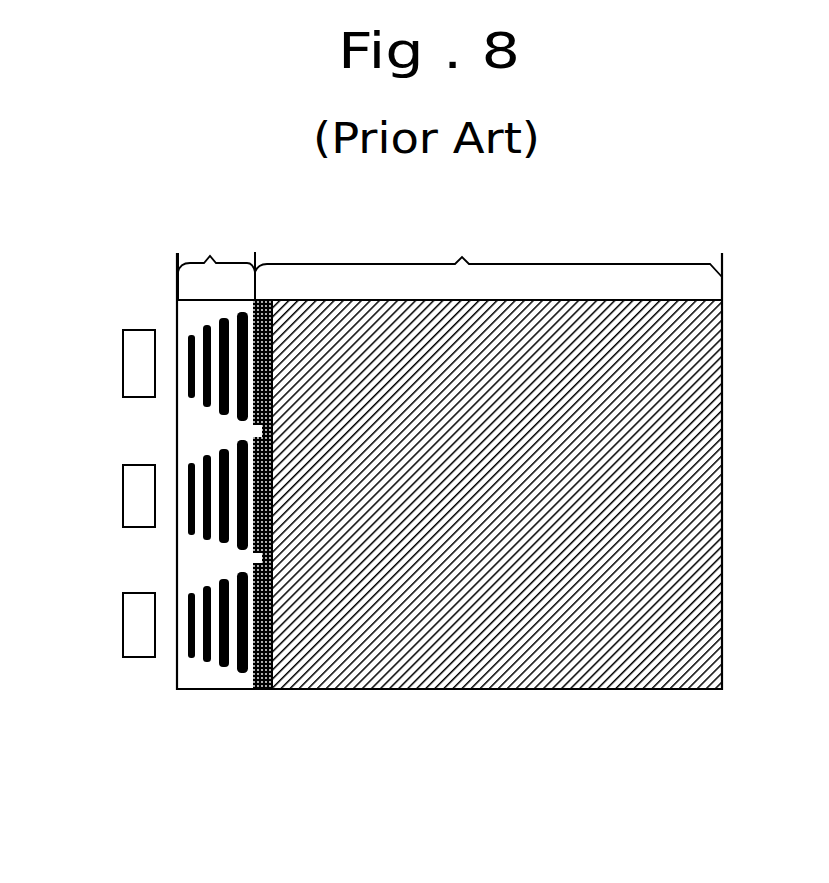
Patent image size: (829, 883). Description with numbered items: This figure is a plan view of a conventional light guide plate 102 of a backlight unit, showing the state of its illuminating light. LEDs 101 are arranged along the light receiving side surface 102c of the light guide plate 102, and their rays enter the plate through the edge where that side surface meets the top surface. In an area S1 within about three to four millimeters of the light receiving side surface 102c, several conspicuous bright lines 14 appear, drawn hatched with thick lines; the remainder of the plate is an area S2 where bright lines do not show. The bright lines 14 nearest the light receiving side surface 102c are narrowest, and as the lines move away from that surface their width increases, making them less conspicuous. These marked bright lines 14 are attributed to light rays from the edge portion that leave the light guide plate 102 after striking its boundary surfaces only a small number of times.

The LEDs 101 is at (142, 330).
The light guide plate 102 is at (588, 690).
The light receiving side surface 102c is at (172, 675).
The bright lines 14 is at (207, 541).
The area where bright lines show up S1 is at (210, 255).
The area where bright lines do not show S2 is at (500, 227).